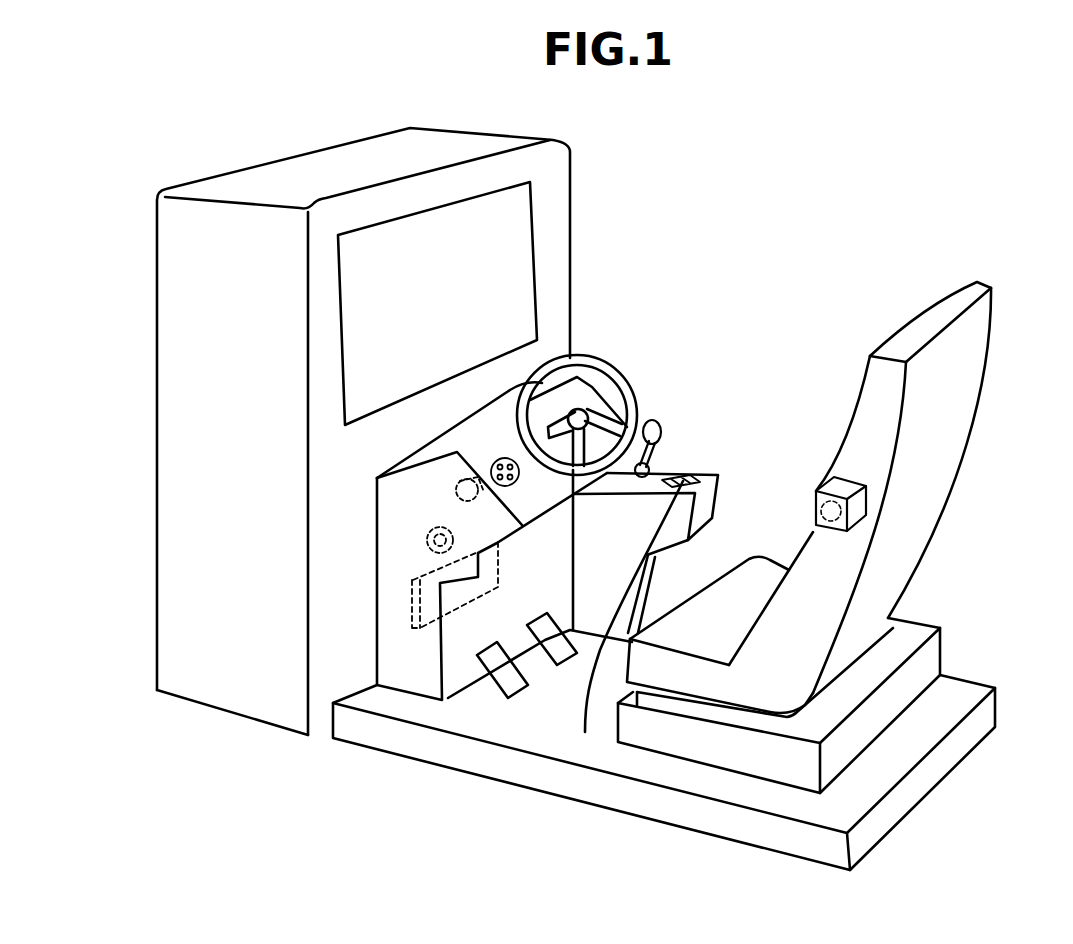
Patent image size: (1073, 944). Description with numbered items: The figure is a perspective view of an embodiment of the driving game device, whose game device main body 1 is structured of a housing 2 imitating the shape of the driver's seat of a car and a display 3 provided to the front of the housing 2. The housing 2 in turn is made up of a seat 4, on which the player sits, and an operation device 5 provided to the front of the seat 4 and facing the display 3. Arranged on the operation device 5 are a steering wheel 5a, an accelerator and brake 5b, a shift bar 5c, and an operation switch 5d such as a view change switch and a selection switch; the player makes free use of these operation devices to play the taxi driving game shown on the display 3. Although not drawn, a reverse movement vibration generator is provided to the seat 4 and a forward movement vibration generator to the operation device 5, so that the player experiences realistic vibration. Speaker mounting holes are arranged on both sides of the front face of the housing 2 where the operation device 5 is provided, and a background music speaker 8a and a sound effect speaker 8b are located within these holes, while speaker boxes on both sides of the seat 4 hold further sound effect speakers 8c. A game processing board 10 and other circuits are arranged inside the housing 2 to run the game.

The game device main body 1 is at (828, 224).
The housing 2 is at (749, 386).
The display 3 is at (507, 246).
The seat 4 is at (977, 389).
The operation device 5 is at (595, 845).
The steering wheel 5a is at (557, 477).
The accelerator and brake 5b is at (515, 687).
The shift bar 5c is at (567, 663).
The operation switch 5d is at (641, 474).
The background music speaker 8a is at (460, 500).
The sound effect speaker 8b is at (432, 552).
The sound effect speakers 8c is at (834, 516).
The game processing board 10 is at (420, 627).